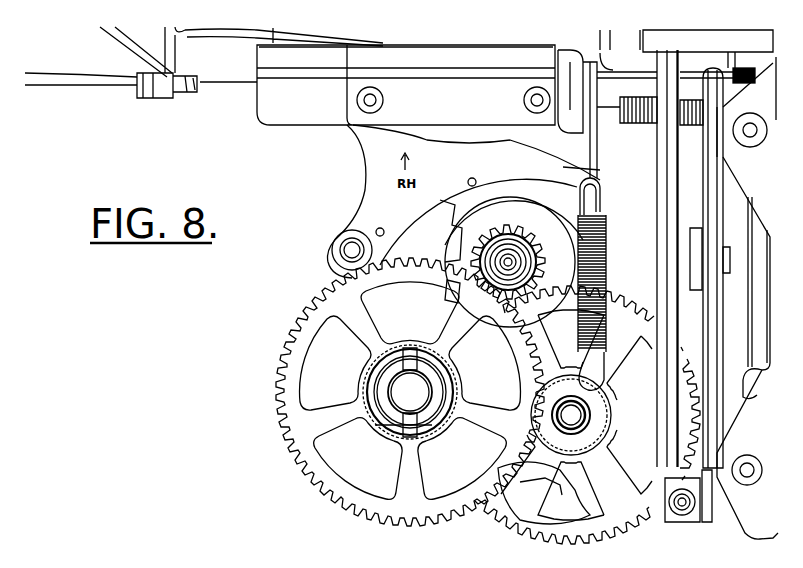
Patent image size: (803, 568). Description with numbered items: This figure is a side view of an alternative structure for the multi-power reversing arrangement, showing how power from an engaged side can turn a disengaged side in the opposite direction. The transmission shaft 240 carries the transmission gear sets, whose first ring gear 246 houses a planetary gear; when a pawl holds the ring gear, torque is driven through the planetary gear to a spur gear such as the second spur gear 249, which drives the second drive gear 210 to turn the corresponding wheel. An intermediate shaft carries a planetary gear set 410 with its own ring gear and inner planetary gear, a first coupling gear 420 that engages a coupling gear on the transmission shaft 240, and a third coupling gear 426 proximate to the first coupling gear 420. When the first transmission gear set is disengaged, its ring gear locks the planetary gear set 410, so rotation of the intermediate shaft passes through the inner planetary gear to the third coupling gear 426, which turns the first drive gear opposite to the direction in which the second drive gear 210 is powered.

The second drive gear 210 is at (305, 415).
The transmission shaft 240 is at (508, 262).
The first ring gear 246 is at (457, 193).
The second spur gear 249 is at (508, 262).
The planetary gear set 410 is at (565, 483).
The first coupling gear 420 is at (522, 513).
The third coupling gear 426 is at (578, 452).